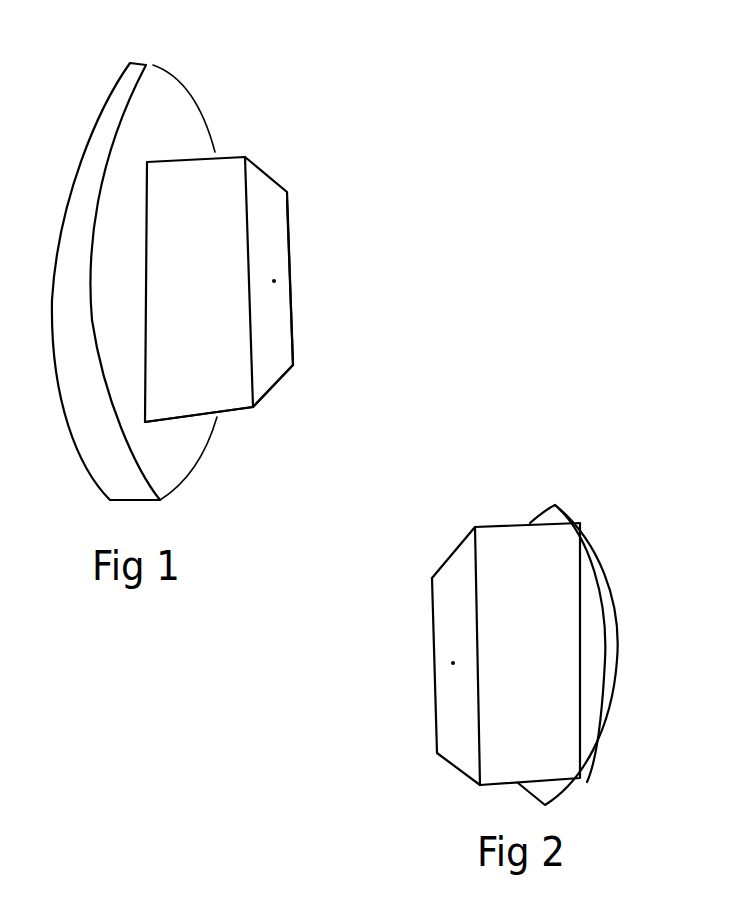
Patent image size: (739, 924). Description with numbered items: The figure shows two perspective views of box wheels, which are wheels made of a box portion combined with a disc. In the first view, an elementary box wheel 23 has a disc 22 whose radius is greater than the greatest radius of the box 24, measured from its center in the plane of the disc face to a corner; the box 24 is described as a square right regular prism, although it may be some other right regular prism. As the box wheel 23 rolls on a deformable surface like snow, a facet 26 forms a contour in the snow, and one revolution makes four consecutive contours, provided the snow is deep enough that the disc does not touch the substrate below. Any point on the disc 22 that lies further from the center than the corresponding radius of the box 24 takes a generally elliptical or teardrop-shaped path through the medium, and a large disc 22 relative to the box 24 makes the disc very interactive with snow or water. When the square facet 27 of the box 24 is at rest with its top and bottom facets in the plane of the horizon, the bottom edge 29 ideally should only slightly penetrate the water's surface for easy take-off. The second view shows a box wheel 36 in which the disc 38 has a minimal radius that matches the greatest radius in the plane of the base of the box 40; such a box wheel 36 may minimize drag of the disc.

In FIG. 1, the disc 22 is at (193, 103).
In FIG. 1, the box wheel 23 is at (423, 112).
In FIG. 1, the box 24 is at (287, 218).
In FIG. 1, the facet 26 is at (223, 398).
In FIG. 1, the square facet 27 is at (275, 326).
In FIG. 1, the bottom edge 29 is at (278, 387).
In FIG. 2, the box wheel 36 is at (343, 695).
In FIG. 2, the disc 38 is at (612, 578).
In FIG. 2, the box 40 is at (437, 640).